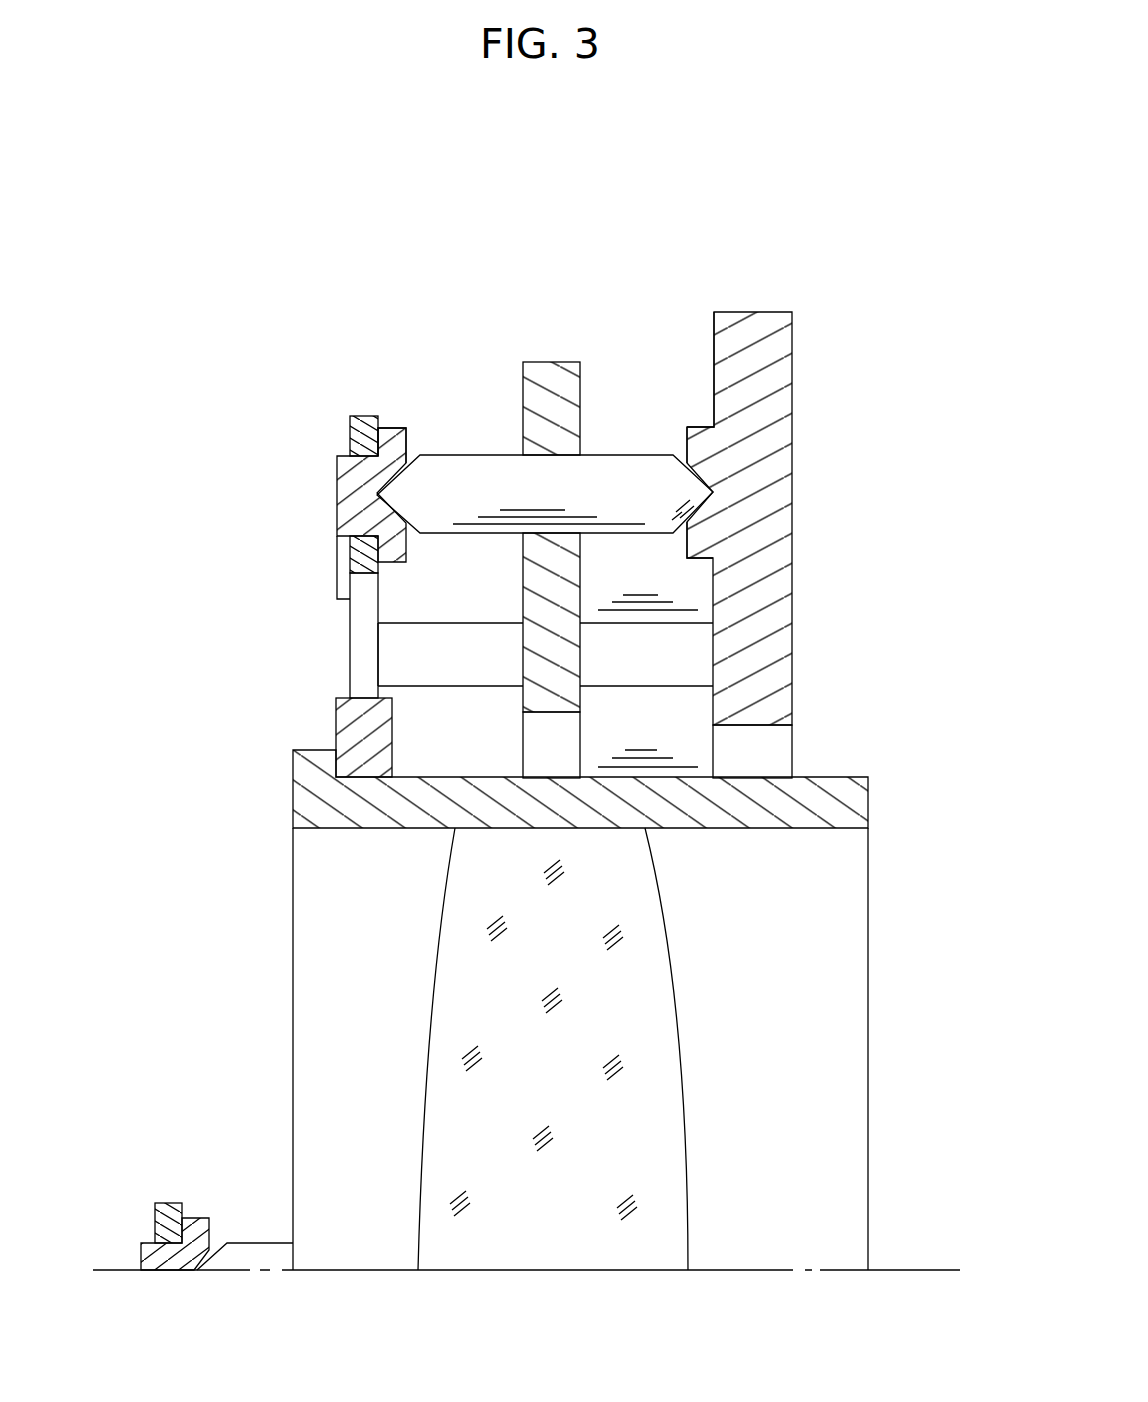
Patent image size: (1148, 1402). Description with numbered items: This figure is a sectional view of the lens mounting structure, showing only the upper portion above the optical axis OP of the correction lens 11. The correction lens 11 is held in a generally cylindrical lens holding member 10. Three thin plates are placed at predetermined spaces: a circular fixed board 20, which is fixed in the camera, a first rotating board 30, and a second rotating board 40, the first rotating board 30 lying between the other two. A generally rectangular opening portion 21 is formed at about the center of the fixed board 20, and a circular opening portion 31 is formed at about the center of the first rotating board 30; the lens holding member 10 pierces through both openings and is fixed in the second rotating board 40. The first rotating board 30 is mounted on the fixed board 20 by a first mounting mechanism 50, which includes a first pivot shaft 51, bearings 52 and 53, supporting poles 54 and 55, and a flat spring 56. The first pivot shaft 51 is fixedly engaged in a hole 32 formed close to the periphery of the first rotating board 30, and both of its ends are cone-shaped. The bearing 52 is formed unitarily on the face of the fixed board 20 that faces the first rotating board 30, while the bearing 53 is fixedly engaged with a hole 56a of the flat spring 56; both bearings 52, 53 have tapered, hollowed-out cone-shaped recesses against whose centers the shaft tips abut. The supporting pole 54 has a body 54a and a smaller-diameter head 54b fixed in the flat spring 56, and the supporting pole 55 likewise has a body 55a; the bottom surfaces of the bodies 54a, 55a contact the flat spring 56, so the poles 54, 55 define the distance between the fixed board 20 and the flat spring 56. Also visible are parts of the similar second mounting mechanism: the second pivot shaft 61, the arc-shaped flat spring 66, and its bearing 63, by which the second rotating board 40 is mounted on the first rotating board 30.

The lens holding member 10 is at (845, 797).
The correction lens 11 is at (592, 1023).
The fixed board 20 is at (768, 304).
The opening portion 21 is at (752, 725).
The first rotating board 30 is at (566, 355).
The opening portion 31 is at (552, 712).
The hole 32 is at (556, 455).
The second rotating board 40 is at (325, 730).
The first mounting mechanism 50 is at (499, 377).
The first pivot shaft 51 is at (633, 455).
The bearing 52 is at (700, 427).
The bearing 53 is at (386, 428).
The supporting pole 54 is at (398, 634).
The body 54a is at (432, 623).
The head 54b is at (337, 566).
The supporting pole 55 is at (395, 694).
The body 55a is at (600, 685).
The flat spring 56 is at (338, 439).
The hole 56a is at (338, 478).
The second pivot shaft 61 is at (252, 1243).
The bearing 63 is at (197, 1218).
The flat spring 66 is at (155, 1218).
The optical axis OP is at (924, 1268).